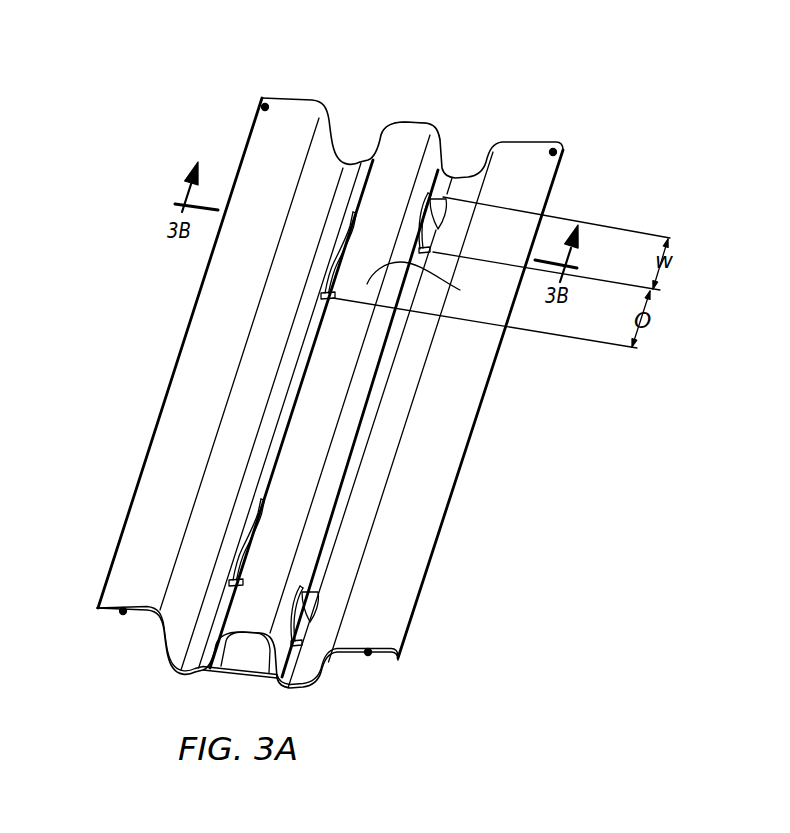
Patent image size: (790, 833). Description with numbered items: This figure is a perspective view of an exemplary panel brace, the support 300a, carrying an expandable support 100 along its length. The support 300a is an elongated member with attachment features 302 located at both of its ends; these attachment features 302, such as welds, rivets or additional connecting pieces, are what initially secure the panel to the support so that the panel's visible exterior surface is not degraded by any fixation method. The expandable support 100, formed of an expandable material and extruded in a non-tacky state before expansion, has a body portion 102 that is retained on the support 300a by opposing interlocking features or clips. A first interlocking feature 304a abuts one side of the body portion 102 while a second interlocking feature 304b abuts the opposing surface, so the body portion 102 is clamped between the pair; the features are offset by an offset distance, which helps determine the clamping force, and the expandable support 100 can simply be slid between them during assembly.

The expandable support 100 is at (405, 150).
The body portion 102 is at (460, 290).
The support 300a is at (458, 393).
The attachment features 302 is at (266, 104).
The first interlocking feature 304a is at (447, 198).
The second interlocking feature 304b is at (343, 223).